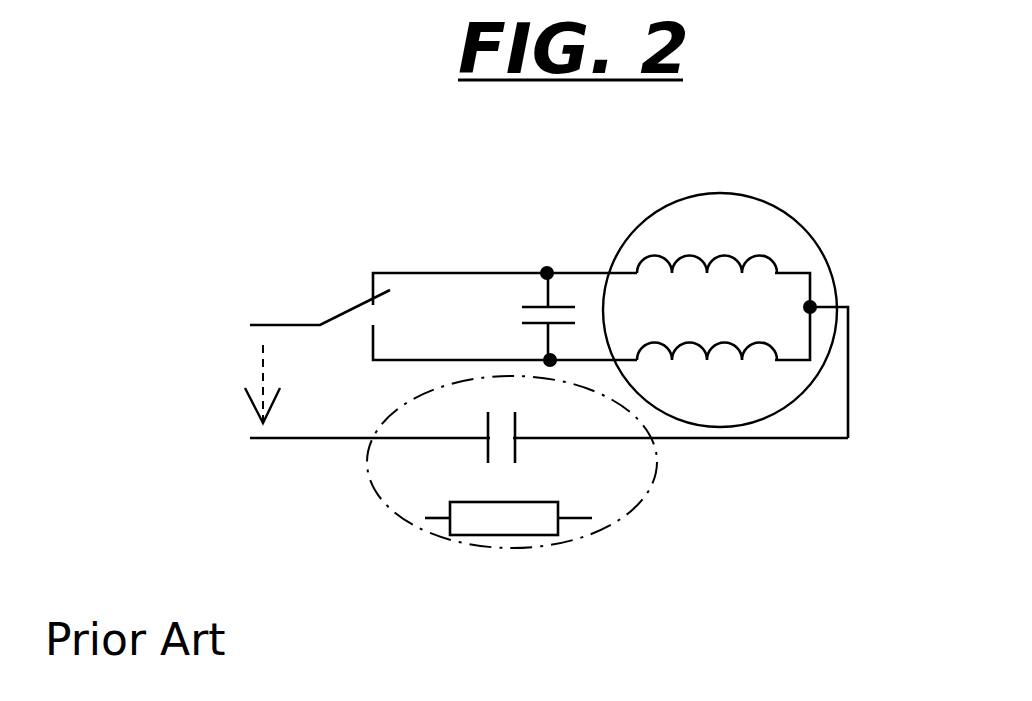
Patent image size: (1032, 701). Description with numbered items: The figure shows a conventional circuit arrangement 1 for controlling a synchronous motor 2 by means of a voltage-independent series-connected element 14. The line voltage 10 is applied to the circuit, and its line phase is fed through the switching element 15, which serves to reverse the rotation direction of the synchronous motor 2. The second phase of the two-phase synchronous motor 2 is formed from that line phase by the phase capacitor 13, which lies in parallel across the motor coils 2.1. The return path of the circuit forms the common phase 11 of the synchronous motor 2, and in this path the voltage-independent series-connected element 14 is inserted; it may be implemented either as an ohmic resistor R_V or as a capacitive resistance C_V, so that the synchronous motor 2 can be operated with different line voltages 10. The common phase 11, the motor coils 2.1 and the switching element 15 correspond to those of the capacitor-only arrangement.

The circuit arrangement 1 is at (453, 235).
The synchronous motor 2 is at (813, 385).
The motor coils 2.1 is at (777, 257).
The line voltage 10 is at (242, 367).
The common phase 11 is at (710, 445).
The phase capacitor 13 is at (535, 295).
The voltage-independent series-connected element 14 is at (382, 492).
The switching element 15 is at (363, 295).